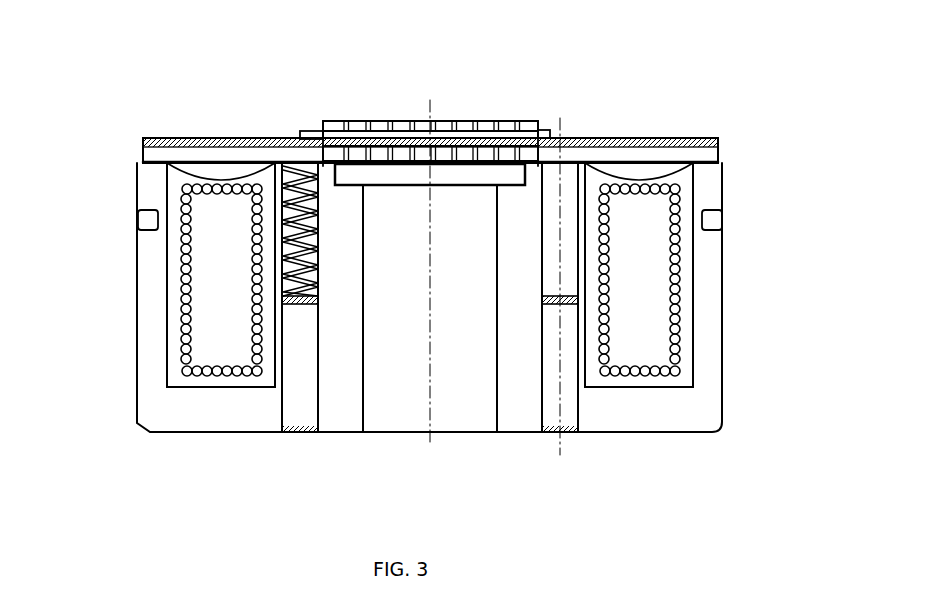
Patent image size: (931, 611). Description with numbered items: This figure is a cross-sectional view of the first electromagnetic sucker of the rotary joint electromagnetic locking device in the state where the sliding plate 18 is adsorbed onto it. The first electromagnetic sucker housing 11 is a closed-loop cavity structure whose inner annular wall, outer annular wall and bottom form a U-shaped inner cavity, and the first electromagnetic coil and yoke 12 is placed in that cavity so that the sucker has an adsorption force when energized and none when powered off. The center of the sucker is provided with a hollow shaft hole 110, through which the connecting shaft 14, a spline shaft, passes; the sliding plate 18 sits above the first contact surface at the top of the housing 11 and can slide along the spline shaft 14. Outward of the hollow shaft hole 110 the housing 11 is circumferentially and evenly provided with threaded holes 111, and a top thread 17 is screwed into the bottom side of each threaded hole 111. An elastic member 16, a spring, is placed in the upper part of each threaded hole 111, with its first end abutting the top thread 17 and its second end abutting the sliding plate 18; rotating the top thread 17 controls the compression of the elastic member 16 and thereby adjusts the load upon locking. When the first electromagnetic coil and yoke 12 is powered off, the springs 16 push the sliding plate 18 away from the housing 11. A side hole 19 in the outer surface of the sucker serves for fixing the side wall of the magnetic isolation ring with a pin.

The first electromagnetic sucker housing 11 is at (683, 418).
The first electromagnetic coil and yoke 12 is at (682, 365).
The connecting shaft 14 is at (322, 118).
The elastic member 16 is at (272, 274).
The top thread 17 is at (310, 393).
The sliding plate 18 is at (720, 140).
The side hole 19 is at (138, 215).
The hollow shaft hole 110 is at (368, 430).
The threaded hole 111 is at (141, 161).